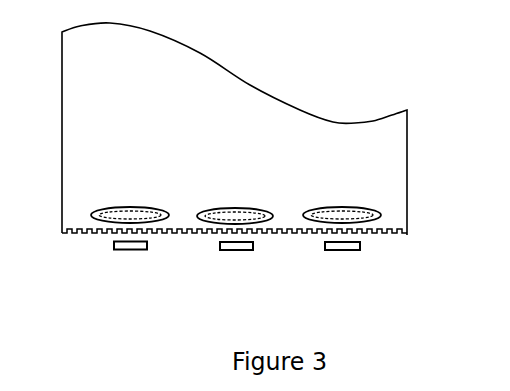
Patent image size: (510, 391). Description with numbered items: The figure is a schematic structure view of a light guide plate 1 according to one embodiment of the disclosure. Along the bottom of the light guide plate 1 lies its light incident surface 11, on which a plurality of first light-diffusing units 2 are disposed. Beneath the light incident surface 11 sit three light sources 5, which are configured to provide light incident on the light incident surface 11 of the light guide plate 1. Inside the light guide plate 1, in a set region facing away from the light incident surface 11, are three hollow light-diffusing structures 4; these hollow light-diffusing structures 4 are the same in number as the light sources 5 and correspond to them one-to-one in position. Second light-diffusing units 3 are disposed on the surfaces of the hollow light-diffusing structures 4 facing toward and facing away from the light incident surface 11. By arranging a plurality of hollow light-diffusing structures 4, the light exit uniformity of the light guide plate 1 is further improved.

The light guide plate 1 is at (385, 163).
The first light-diffusing unit 2 is at (234, 265).
The second light-diffusing unit 3 is at (236, 190).
The light-diffusing structure 4 is at (140, 215).
The light source 5 is at (135, 250).
The light incident surface 11 is at (168, 235).